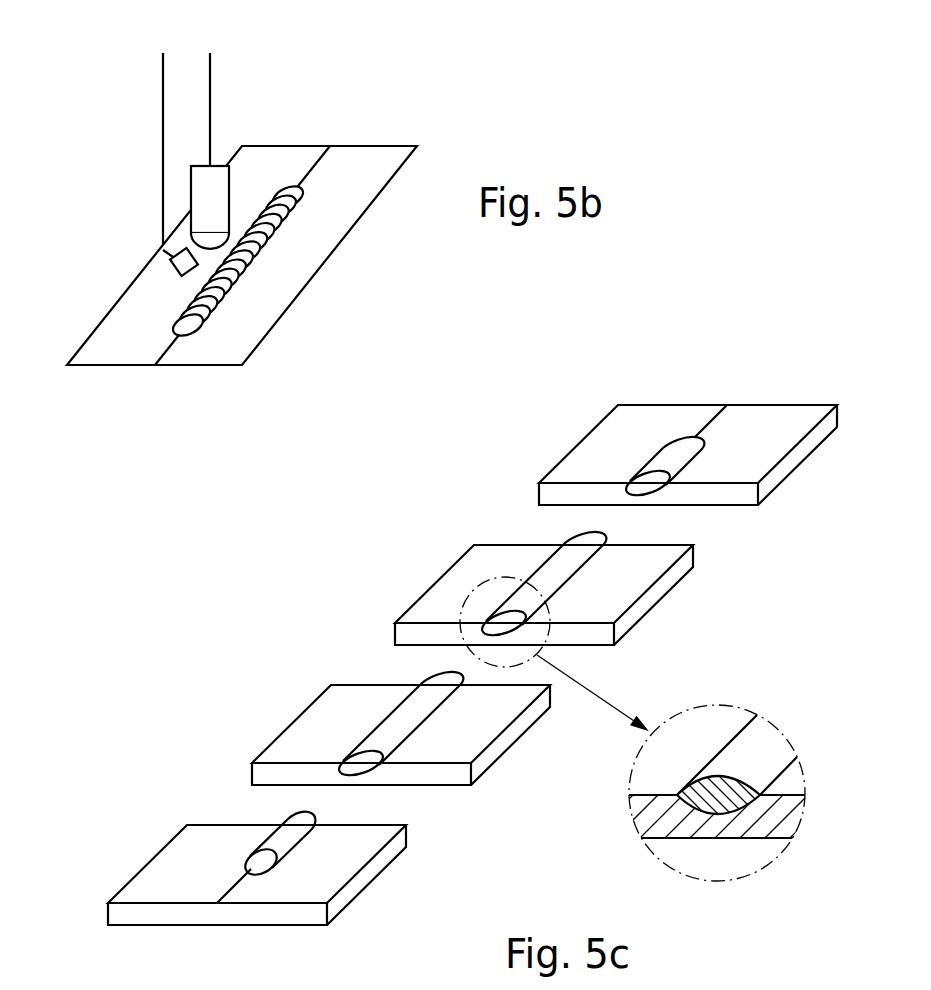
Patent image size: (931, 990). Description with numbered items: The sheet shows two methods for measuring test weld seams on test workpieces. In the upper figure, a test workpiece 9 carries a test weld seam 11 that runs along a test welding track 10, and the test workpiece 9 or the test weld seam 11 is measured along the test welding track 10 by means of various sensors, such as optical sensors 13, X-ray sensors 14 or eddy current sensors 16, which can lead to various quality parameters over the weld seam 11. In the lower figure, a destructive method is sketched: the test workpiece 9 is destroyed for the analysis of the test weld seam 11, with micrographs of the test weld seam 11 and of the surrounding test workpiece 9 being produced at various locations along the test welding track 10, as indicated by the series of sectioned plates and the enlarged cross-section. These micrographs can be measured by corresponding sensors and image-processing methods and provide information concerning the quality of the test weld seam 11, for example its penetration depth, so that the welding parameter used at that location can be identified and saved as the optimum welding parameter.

In FIG. 5b, the test workpiece 9 is at (352, 170).
In FIG. 5c, the test workpiece 9 is at (765, 440).
In FIG. 5b, the test welding track 10 is at (313, 167).
In FIG. 5c, the test welding track 10 is at (708, 422).
In FIG. 5b, the test weld seam 11 is at (228, 293).
In FIG. 5c, the test weld seam 11 is at (663, 465).
In FIG. 5b, the optical sensor 13 is at (206, 183).
In FIG. 5b, the X-ray sensor 14 is at (112, 252).
In FIG. 5b, the eddy current sensor 16 is at (175, 260).